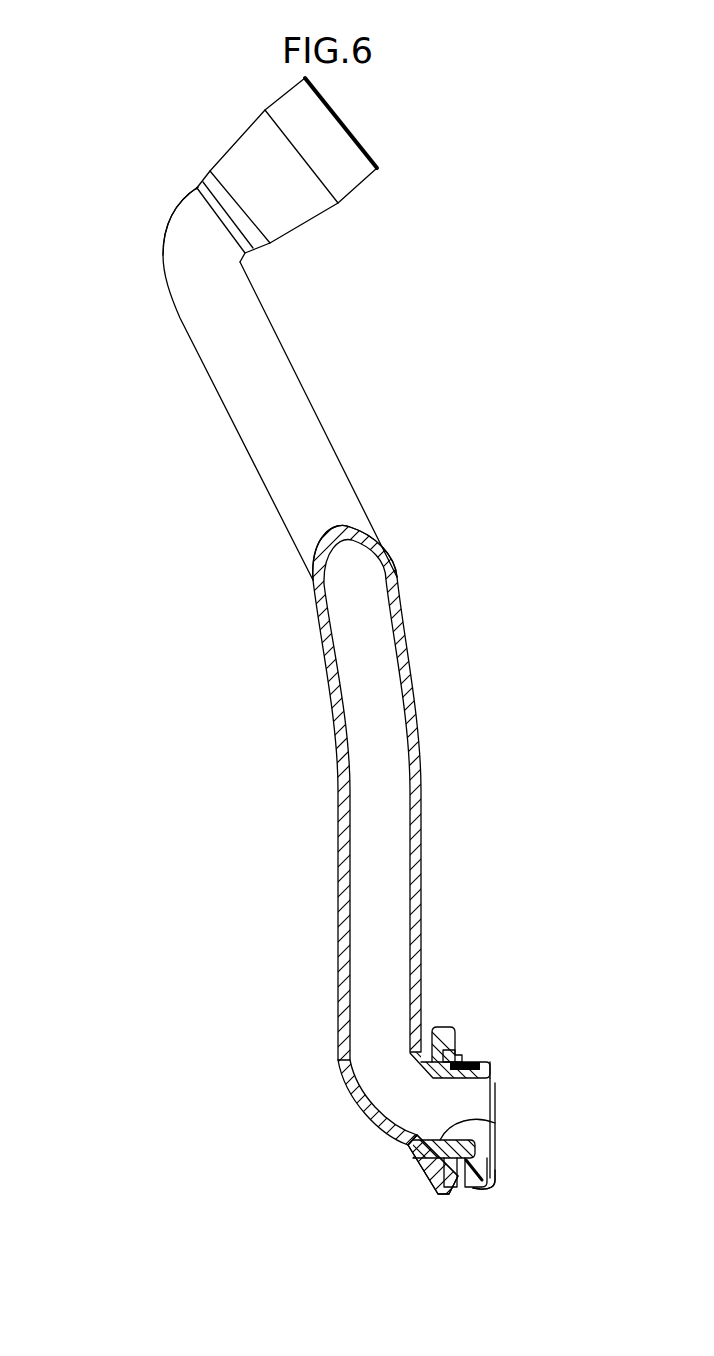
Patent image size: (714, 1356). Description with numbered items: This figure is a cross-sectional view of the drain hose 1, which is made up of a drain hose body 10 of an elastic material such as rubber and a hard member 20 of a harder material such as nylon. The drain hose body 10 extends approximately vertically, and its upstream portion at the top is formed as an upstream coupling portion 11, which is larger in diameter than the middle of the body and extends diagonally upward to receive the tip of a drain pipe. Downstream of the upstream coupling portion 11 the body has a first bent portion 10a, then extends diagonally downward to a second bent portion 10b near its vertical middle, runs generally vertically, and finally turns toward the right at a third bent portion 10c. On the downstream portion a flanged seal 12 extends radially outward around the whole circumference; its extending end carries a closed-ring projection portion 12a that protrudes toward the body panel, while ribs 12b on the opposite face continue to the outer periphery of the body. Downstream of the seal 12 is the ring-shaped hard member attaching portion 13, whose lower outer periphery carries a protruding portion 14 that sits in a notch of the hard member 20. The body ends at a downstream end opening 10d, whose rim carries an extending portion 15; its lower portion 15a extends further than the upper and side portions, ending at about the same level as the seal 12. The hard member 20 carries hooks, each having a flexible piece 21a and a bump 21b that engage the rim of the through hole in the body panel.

The drain hose 1 is at (409, 363).
The drain hose body 10 is at (228, 413).
The first bent portion 10a is at (165, 238).
The second bent portion 10b is at (395, 568).
The third bent portion 10c is at (355, 1110).
The downstream end opening 10d is at (492, 1083).
The upstream coupling portion 11 is at (255, 158).
The seal 12 is at (443, 1027).
The projection portion 12a is at (458, 1187).
The ribs 12b is at (413, 1152).
The hard member attaching portion 13 is at (495, 1123).
The protruding portion 14 is at (473, 1185).
The extending portion 15 is at (490, 1058).
The lower portion 15a is at (495, 1187).
The hard member 20 is at (472, 1057).
The flexible piece 21a is at (473, 1060).
The bump 21b is at (472, 1048).